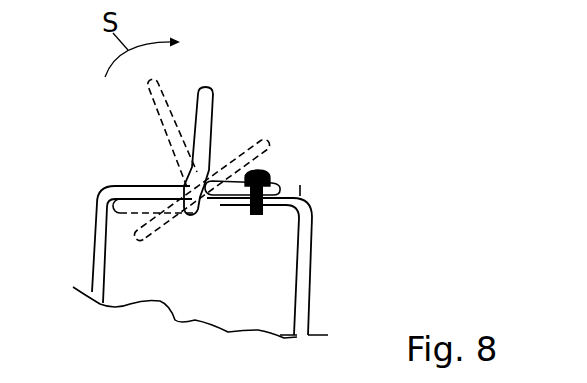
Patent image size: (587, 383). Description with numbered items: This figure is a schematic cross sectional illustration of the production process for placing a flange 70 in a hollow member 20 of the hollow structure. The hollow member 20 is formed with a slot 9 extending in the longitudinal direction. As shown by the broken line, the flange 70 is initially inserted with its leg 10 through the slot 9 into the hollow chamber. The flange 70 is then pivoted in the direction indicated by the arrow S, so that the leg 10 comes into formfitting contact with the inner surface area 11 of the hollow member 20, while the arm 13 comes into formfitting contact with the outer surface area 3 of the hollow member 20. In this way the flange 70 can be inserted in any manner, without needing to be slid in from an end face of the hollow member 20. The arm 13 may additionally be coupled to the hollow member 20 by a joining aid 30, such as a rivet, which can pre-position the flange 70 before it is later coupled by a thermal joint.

The outer surface area 3 is at (303, 190).
The slot 9 is at (212, 198).
The leg 10 is at (142, 209).
The inner surface area 11 is at (97, 221).
The arm 13 is at (274, 187).
The hollow member 20 is at (302, 267).
The joining aid 30 is at (264, 173).
The flange 70 is at (216, 125).